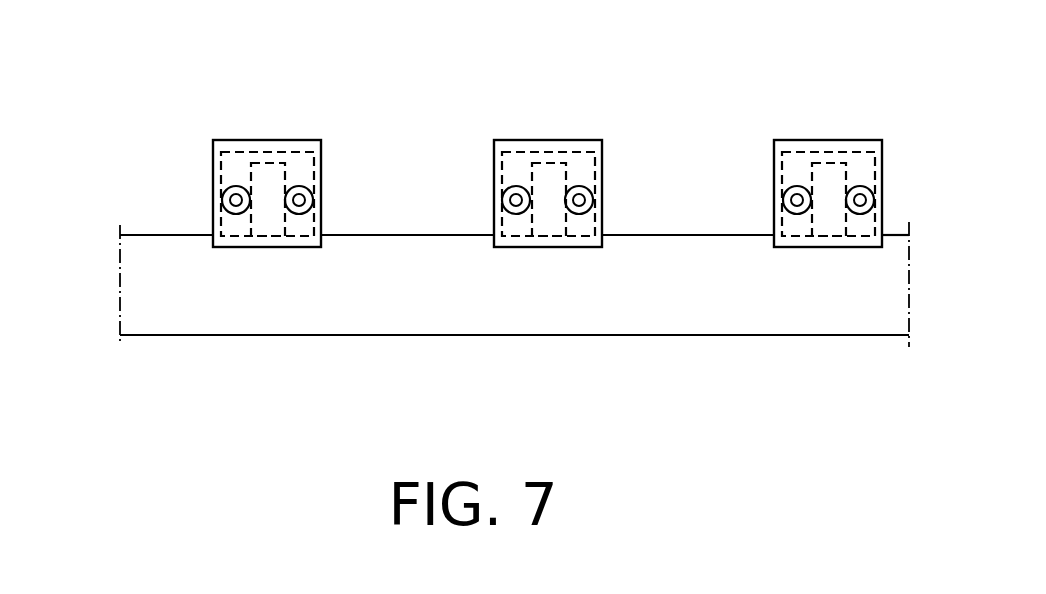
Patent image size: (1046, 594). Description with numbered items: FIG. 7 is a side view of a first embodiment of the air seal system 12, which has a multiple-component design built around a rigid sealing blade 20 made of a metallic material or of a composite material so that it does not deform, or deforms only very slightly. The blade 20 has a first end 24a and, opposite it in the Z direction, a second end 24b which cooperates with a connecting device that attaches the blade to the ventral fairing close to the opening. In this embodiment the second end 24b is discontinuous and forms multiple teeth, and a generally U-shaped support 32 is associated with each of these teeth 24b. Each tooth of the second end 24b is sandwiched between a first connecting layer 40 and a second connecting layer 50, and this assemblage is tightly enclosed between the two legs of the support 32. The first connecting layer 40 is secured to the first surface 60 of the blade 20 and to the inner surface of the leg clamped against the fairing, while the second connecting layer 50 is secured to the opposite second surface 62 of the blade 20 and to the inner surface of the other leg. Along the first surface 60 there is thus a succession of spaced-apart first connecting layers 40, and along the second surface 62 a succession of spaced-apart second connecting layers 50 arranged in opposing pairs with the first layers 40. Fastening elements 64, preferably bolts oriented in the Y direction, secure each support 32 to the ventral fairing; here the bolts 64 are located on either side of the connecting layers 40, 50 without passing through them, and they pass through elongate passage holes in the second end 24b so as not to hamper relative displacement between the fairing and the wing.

The air seal system 12 is at (636, 339).
The sealing blade 20 is at (113, 310).
The first end 24a is at (370, 315).
The second end 24b is at (317, 170).
The support 32 is at (232, 141).
The first connecting layer 40 is at (548, 147).
The second connecting layer 50 is at (268, 175).
The first surface 60 is at (158, 315).
The second surface 62 is at (168, 253).
The fastening elements 64 is at (299, 213).